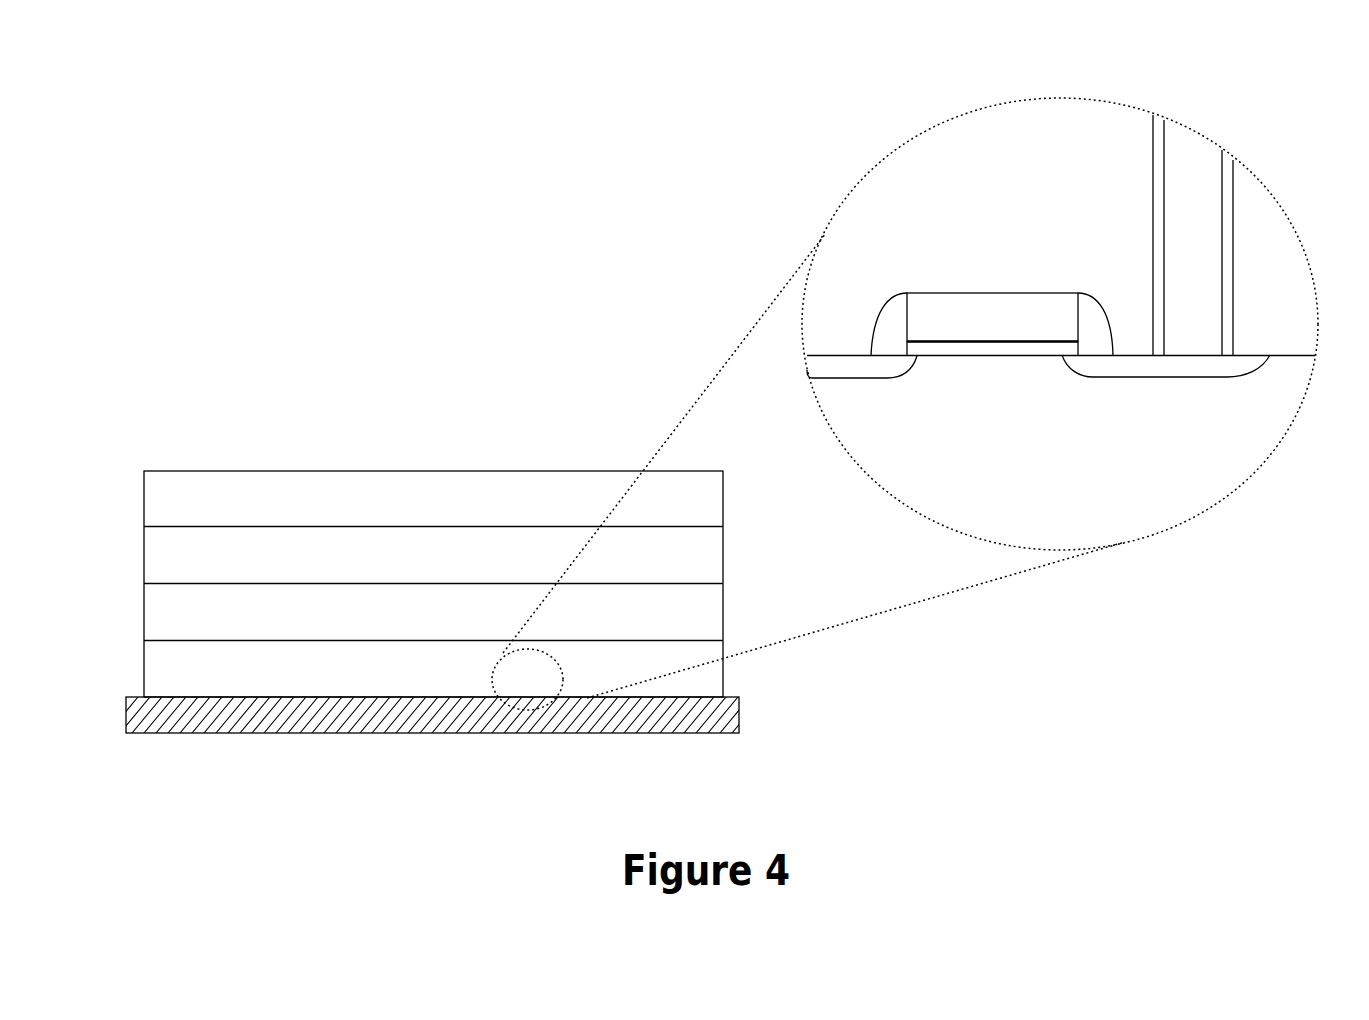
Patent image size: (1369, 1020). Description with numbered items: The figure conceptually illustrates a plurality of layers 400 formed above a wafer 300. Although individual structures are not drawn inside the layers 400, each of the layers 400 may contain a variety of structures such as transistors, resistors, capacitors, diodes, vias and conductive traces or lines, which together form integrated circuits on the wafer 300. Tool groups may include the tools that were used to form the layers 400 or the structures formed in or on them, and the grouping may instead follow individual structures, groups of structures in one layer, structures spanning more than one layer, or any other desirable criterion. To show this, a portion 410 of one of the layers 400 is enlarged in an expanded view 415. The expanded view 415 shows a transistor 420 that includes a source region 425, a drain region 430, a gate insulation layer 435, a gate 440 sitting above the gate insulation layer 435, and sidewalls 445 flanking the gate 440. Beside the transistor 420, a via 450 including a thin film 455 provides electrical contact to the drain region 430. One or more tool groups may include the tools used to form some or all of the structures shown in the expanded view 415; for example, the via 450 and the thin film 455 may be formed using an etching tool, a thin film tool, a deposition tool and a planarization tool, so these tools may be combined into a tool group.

The wafer 300 is at (357, 733).
The layers 400 is at (144, 673).
The portion 410 is at (528, 708).
The expanded view 415 is at (1155, 535).
The transistor 420 is at (967, 203).
The source region 425 is at (848, 380).
The drain region 430 is at (1117, 378).
The gate insulation layer 435 is at (942, 358).
The gate 440 is at (1018, 293).
The sidewalls 445 is at (897, 293).
The via 450 is at (1187, 142).
The thin film 455 is at (1227, 157).